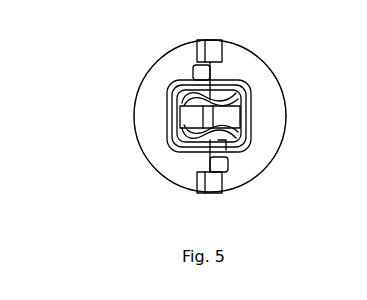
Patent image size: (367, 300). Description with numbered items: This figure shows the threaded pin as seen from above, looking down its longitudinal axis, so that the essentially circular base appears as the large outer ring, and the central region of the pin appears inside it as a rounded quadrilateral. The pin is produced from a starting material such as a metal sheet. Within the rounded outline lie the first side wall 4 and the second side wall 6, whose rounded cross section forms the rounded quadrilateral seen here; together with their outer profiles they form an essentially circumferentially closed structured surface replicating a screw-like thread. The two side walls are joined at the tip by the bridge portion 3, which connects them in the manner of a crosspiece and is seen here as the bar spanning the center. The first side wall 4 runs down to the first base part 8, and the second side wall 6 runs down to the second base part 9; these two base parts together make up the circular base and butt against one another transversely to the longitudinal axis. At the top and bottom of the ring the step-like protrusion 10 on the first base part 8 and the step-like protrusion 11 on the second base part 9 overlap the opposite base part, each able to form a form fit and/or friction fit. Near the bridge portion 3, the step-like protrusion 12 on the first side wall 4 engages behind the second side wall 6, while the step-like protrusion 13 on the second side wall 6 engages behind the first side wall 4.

The bridge portion 3 is at (248, 103).
The first side wall 4 is at (180, 90).
The second side wall 6 is at (230, 100).
The first base part 8 is at (143, 117).
The second base part 9 is at (273, 117).
The step-like protrusion 10 is at (217, 39).
The step-like protrusion 11 is at (203, 195).
The step-like protrusion 12 is at (225, 158).
The step-like protrusion 13 is at (212, 98).